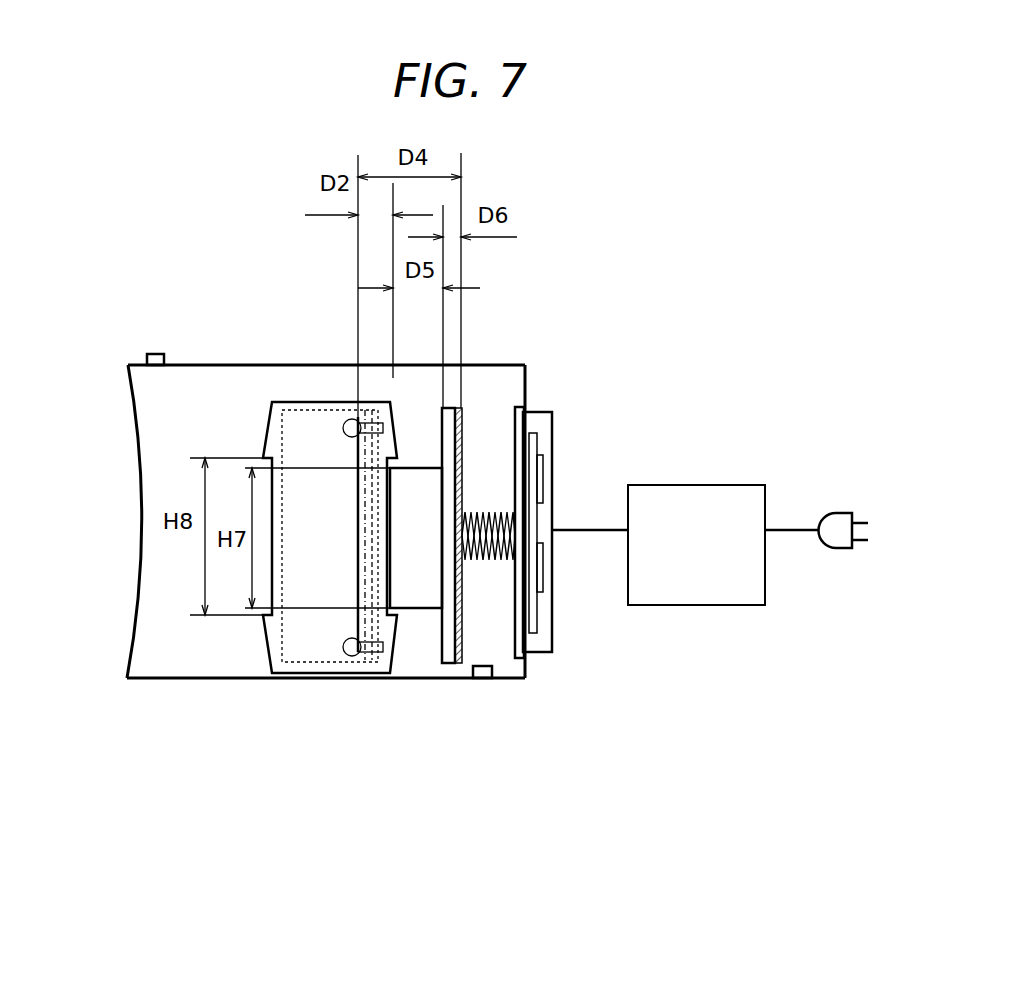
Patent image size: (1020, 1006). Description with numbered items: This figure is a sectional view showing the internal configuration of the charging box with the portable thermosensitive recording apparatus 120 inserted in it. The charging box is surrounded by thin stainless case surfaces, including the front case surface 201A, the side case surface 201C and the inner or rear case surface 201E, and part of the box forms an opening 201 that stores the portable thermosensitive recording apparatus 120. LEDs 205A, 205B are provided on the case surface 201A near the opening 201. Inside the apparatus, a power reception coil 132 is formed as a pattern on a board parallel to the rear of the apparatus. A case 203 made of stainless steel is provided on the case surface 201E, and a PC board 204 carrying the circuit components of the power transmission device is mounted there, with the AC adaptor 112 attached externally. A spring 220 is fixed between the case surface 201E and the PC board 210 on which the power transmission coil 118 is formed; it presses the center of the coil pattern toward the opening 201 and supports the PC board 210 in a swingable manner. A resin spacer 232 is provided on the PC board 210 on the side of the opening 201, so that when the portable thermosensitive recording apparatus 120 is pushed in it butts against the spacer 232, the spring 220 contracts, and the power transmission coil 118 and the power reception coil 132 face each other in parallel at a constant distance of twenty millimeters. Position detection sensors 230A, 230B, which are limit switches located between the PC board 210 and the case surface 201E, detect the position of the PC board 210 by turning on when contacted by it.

The opening 201 is at (341, 528).
The case surface 201A is at (260, 365).
The case surface 201C is at (228, 680).
The case surface 201E is at (528, 380).
The LED 205A is at (125, 283).
The LED 205B is at (148, 353).
The portable thermosensitive recording apparatus 120 is at (355, 418).
The power reception coil 132 is at (357, 620).
The spacer 232 is at (432, 590).
The PC board 210 is at (447, 657).
The power transmission coil 118 is at (463, 425).
The spring 220 is at (485, 563).
The case 203 is at (553, 428).
The PC board 204 is at (538, 608).
The position detection sensor 230A is at (564, 770).
The position detection sensor 230B is at (487, 680).
The AC adaptor 112 is at (685, 485).